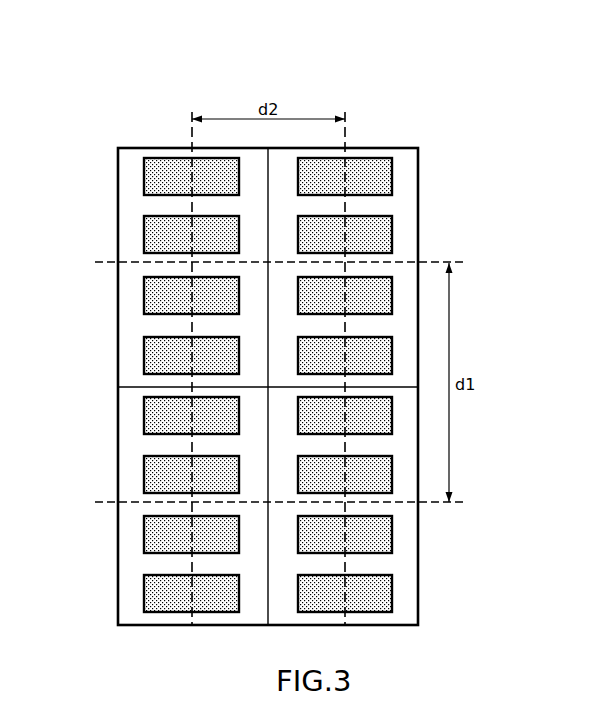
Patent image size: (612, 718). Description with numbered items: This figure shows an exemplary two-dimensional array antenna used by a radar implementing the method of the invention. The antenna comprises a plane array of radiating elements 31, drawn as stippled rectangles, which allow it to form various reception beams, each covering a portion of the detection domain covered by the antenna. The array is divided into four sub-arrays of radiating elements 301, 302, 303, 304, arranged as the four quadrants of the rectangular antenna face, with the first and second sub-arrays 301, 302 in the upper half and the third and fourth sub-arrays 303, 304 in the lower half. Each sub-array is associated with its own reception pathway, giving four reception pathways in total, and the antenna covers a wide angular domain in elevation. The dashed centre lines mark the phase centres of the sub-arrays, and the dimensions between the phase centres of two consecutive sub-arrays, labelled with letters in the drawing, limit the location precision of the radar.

The radiating elements 31 is at (377, 237).
The sub-array of radiating elements 301 is at (131, 240).
The sub-array of radiating elements 302 is at (405, 238).
The sub-array of radiating elements 303 is at (131, 450).
The sub-array of radiating elements 304 is at (403, 568).